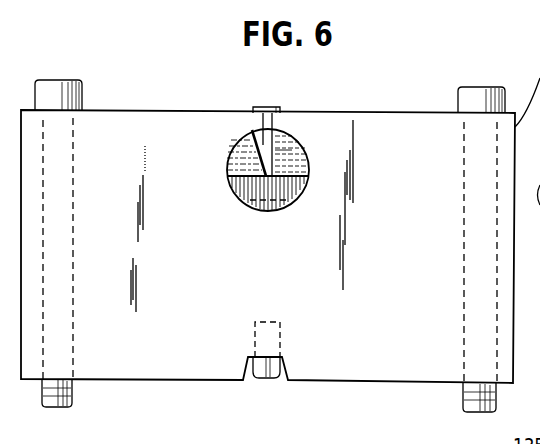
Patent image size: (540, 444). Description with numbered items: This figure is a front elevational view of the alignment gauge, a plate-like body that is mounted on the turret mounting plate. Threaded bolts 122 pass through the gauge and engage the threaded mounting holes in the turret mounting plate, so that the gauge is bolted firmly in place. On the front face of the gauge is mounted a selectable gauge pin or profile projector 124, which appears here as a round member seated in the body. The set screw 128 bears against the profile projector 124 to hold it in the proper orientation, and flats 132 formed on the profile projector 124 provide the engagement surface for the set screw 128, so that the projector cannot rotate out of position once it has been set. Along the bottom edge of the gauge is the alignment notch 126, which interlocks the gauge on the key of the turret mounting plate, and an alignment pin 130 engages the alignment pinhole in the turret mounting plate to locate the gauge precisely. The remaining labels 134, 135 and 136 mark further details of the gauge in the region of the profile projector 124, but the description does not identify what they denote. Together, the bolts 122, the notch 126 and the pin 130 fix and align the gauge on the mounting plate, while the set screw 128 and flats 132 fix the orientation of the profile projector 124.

The threaded bolts 122 is at (70, 80).
The selectable gauge pin or profile projector 124 is at (233, 149).
The alignment notch 126 is at (250, 369).
The set screw 128 is at (271, 107).
The alignment pin 130 is at (280, 345).
The flats 132 is at (292, 128).
The horizontal divider 134 is at (238, 168).
The slot wedge 135 is at (257, 130).
The right bore wall 136 is at (292, 153).